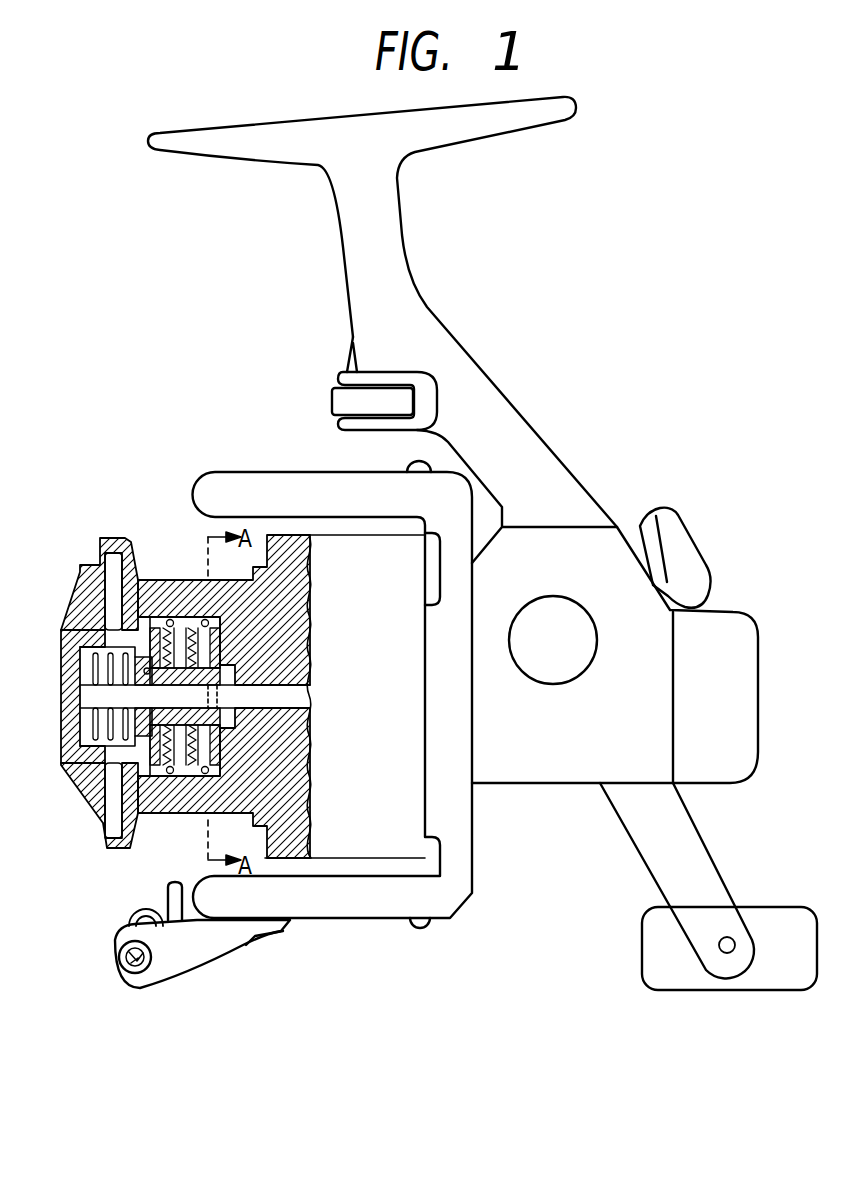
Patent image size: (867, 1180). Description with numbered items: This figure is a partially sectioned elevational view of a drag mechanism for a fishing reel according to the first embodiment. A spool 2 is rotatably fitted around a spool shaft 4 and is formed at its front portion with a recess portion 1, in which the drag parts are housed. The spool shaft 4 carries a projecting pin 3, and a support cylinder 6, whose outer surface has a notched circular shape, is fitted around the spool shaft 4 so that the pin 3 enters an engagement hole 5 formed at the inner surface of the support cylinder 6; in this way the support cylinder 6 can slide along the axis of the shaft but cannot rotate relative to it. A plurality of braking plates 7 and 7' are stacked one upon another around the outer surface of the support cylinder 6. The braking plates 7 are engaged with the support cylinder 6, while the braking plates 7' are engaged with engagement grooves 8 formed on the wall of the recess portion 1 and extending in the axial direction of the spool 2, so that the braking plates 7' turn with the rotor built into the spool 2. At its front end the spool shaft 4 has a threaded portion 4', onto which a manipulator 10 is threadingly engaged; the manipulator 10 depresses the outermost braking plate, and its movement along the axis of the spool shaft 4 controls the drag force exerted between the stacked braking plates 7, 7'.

The recess portion 1 is at (82, 822).
The spool 2 is at (278, 852).
The pin 3 is at (238, 678).
The spool shaft 4 is at (201, 759).
The threaded portion 4' is at (99, 626).
The engagement hole 5 is at (235, 728).
The support cylinder 6 is at (182, 768).
The braking plates 7 is at (179, 545).
The braking plates 7' is at (187, 586).
The engagement grooves 8 is at (121, 618).
The manipulator 10 is at (61, 665).